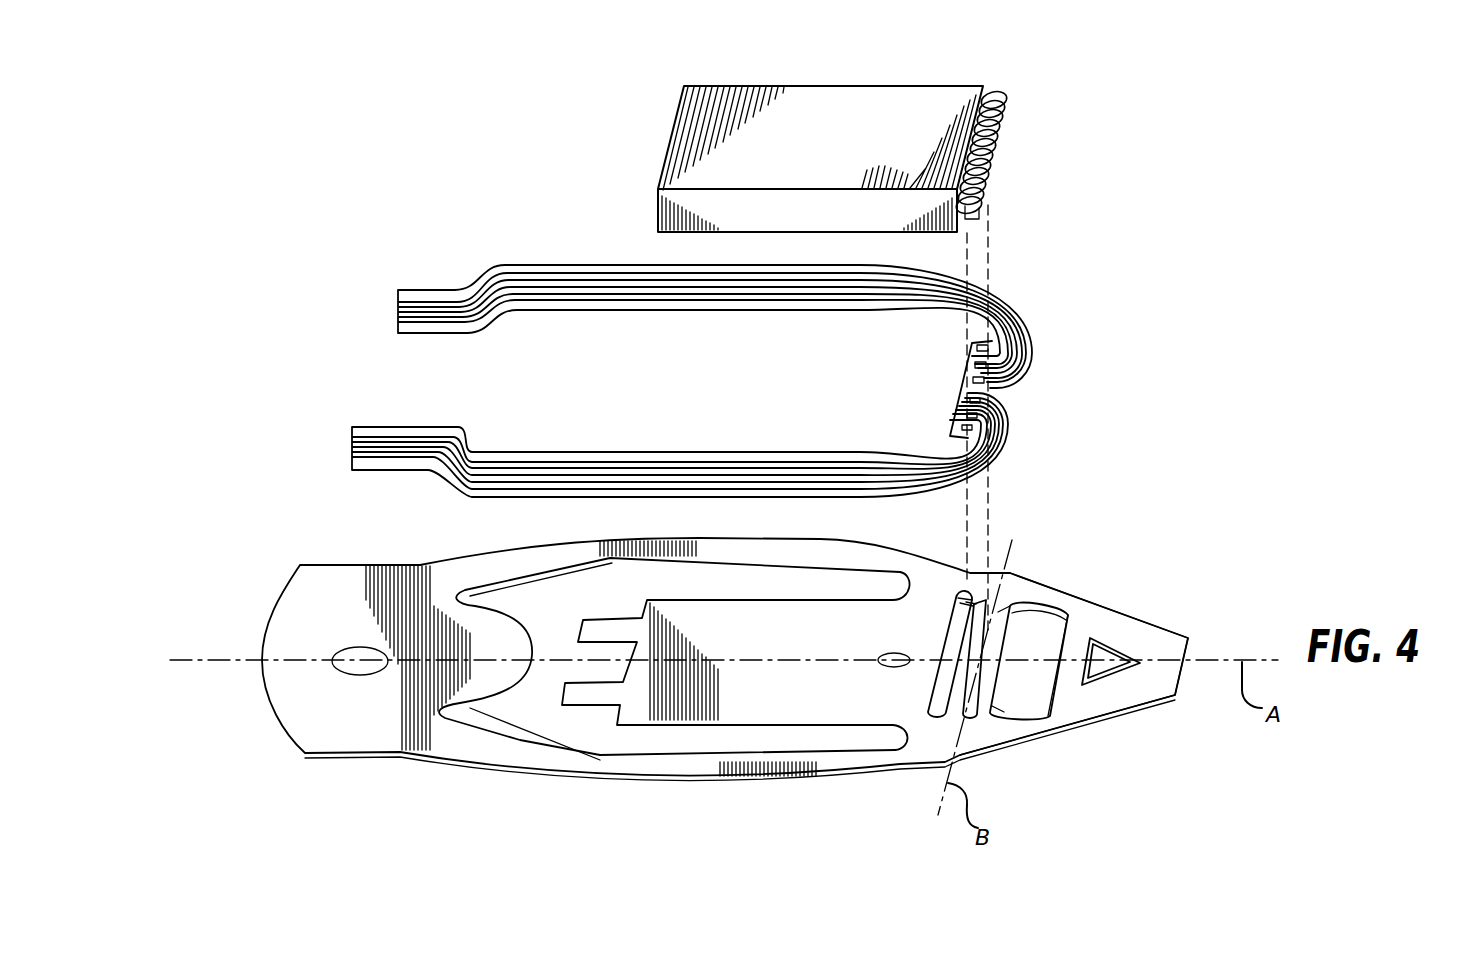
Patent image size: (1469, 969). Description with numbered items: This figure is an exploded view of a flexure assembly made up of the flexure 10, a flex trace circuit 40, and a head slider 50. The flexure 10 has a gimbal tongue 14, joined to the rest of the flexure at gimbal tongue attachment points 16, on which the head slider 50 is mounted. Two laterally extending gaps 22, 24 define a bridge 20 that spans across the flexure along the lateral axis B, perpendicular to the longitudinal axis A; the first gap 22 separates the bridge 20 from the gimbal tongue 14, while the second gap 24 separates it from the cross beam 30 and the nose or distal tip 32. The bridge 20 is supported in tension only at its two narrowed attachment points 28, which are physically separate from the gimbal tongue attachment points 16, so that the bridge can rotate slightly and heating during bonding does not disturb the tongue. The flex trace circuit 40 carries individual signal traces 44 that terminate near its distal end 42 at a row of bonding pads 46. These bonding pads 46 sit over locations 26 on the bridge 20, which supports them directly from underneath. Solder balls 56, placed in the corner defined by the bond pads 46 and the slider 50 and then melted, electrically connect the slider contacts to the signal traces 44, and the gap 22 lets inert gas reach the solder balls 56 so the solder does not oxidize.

The flexure 10 is at (735, 651).
The gimbal tongue 14 is at (803, 644).
The gimbal tongue attachment points 16 is at (945, 588).
The bridge 20 is at (1005, 672).
The gap 22 is at (942, 693).
The gap 24 is at (1043, 675).
The locations 26 is at (988, 627).
The bridge attachment points 28 is at (997, 618).
The cross beam 30 is at (1092, 657).
The nose 32 is at (1163, 645).
The flex trace circuit 40 is at (721, 362).
The distal end 42 is at (1033, 352).
The signal traces 44 is at (447, 478).
The bonding pads 46 is at (995, 345).
The head slider 50 is at (843, 87).
The solder balls 56 is at (1005, 100).